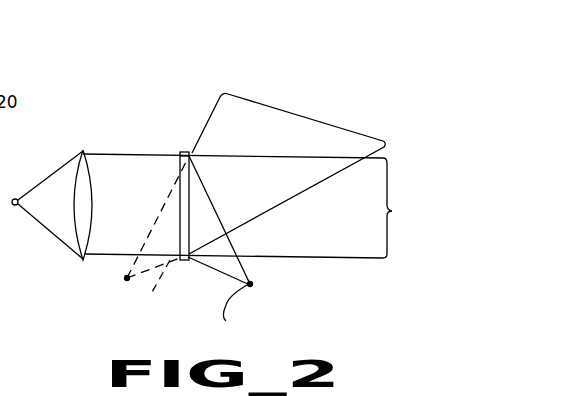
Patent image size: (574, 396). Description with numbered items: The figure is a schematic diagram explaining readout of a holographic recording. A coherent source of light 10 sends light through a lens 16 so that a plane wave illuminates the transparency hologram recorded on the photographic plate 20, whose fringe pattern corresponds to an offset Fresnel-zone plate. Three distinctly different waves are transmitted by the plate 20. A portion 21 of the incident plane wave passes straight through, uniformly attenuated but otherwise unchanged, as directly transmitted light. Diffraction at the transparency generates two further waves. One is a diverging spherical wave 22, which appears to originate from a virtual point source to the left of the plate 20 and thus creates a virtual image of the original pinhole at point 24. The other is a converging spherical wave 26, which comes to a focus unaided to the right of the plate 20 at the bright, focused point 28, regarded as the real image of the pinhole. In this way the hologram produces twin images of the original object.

The coherent source of light 10 is at (14, 199).
The lens 16 is at (84, 150).
The photographic plate 20 is at (185, 151).
The portion of the incident plane wave 21 is at (391, 214).
The diverging spherical wave 22 is at (310, 117).
The virtual image point 24 is at (125, 278).
The converging spherical wave 26 is at (242, 265).
The real image point 28 is at (250, 285).